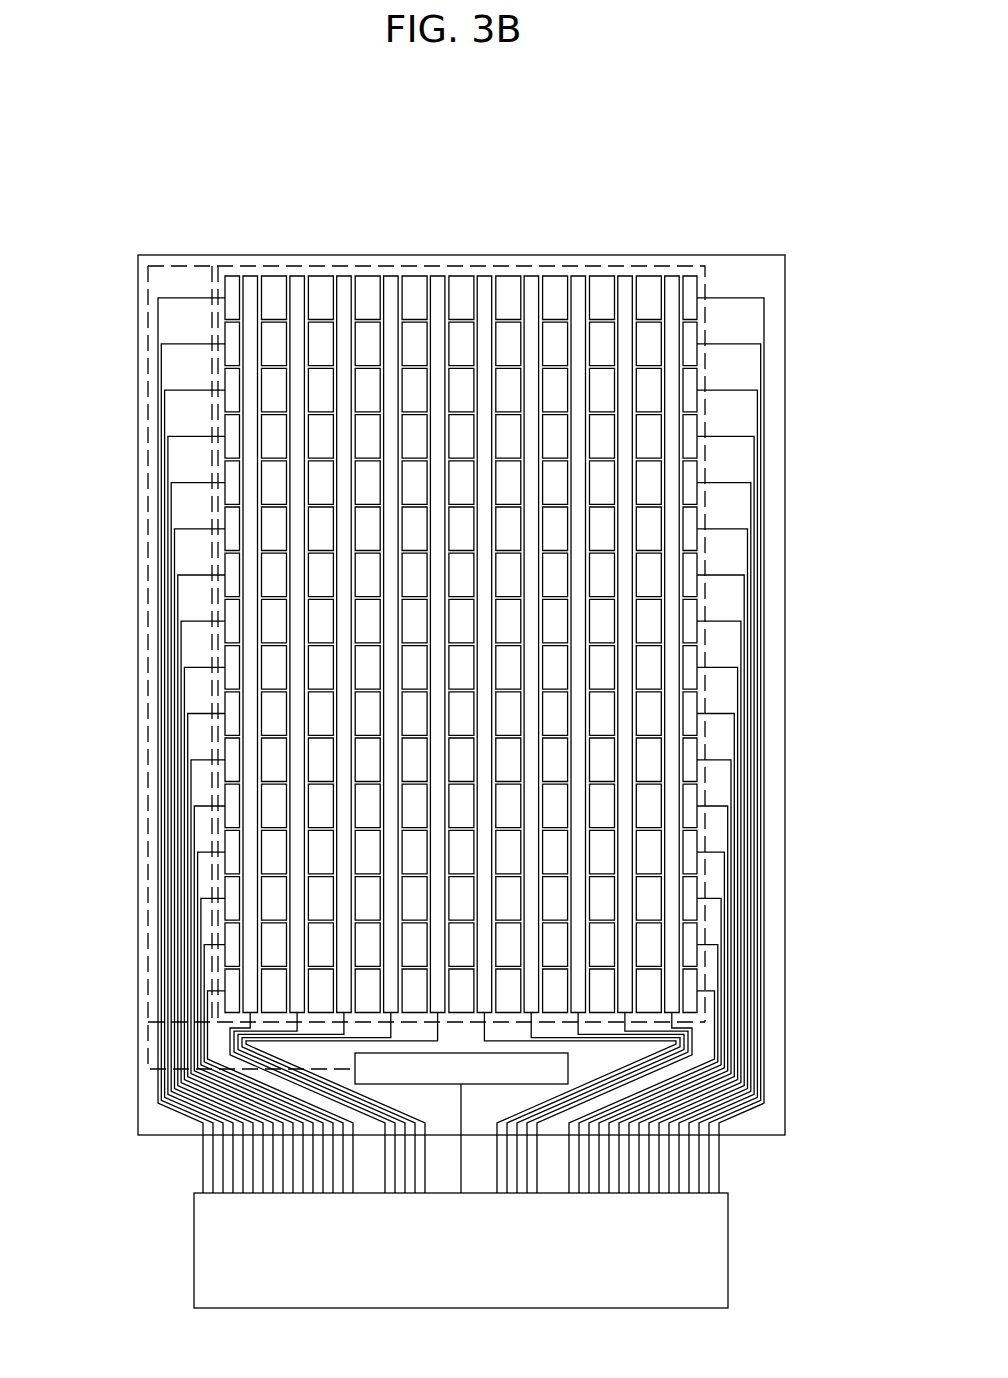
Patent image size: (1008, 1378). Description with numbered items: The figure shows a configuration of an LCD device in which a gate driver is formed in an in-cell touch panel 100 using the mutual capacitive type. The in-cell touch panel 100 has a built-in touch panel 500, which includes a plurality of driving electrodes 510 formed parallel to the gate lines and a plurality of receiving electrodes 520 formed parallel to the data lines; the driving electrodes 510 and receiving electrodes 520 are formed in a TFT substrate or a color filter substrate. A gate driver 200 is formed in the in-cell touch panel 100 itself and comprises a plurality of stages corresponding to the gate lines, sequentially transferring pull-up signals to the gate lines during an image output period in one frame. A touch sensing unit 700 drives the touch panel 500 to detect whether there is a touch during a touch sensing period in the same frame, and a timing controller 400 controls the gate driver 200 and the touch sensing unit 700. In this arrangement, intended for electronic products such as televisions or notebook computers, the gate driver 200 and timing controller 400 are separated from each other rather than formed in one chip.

The in-cell touch panel 100 is at (785, 688).
The gate driver 200 is at (150, 330).
The timing controller 400 is at (461, 1123).
The touch panel 500 is at (707, 359).
The driving electrodes 510 is at (237, 281).
The receiving electrodes 520 is at (300, 281).
The touch sensing unit 700 is at (440, 1264).